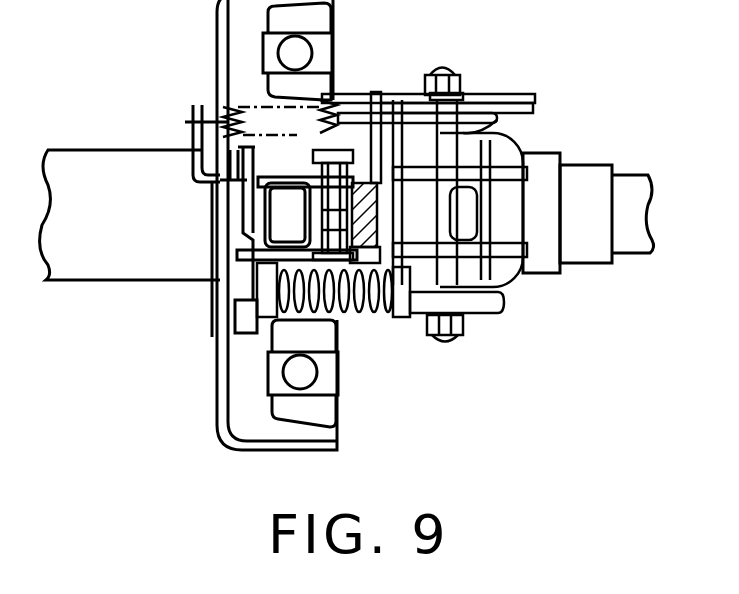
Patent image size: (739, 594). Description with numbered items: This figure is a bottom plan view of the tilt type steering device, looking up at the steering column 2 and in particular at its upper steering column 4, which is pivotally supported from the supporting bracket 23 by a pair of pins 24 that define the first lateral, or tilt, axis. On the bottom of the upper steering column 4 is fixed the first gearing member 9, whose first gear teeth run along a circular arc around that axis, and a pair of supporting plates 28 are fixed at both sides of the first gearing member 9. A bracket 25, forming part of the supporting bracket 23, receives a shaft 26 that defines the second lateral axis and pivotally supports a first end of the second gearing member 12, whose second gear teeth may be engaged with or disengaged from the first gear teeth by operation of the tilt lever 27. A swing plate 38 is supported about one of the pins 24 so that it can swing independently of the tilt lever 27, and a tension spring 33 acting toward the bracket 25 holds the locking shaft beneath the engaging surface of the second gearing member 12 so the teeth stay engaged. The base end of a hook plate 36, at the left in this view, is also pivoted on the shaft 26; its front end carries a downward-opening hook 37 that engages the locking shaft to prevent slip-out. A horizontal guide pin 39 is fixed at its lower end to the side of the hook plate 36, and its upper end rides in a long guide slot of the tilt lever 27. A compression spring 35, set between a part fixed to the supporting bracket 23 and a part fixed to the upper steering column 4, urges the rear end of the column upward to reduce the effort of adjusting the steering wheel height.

The steering column 2 is at (103, 167).
The upper steering column 4 is at (552, 257).
The first gearing member 9 is at (493, 280).
The second gearing member 12 is at (383, 317).
The supporting bracket 23 is at (415, 317).
The pins 24 is at (447, 62).
The bracket 25 is at (277, 260).
The shaft 26 is at (325, 175).
The tilt lever 27 is at (520, 93).
The supporting plates 28 is at (523, 175).
The tension spring 33 is at (337, 110).
The compression spring 35 is at (362, 317).
The hook plate 36 is at (403, 153).
The hook 37 is at (473, 133).
The swing plate 38 is at (463, 107).
The guide pin 39 is at (386, 93).